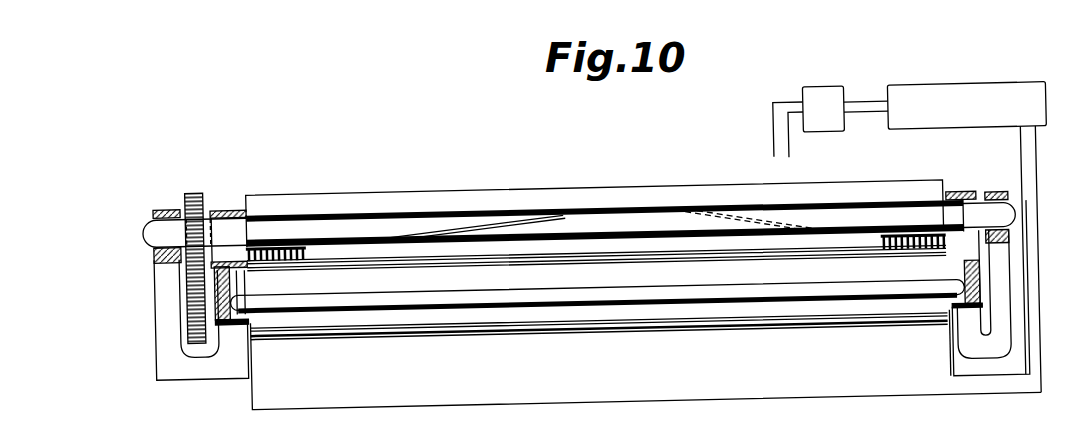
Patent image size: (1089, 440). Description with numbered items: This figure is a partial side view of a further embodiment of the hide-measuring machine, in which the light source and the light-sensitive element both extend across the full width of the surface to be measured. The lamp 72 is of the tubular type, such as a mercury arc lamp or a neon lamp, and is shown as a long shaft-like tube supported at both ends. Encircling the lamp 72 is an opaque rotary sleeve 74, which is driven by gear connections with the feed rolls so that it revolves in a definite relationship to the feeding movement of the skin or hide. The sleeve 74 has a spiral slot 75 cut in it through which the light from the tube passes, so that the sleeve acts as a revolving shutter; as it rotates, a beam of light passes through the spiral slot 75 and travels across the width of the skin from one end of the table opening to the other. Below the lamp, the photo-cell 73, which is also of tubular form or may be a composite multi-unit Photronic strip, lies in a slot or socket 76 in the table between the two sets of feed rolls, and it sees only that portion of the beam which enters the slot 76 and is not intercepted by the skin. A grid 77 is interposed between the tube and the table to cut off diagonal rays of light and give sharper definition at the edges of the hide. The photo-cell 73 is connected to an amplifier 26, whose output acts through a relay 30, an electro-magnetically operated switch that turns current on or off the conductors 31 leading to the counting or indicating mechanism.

The amplifier 26 is at (966, 105).
The relay 30 is at (826, 104).
The conductors 31 is at (792, 144).
The lamp 72 is at (1006, 231).
The photo-cell 73 is at (317, 307).
The rotary sleeve 74 is at (365, 225).
The spiral slot 75 is at (447, 229).
The slot 76 is at (243, 281).
The grid 77 is at (283, 245).